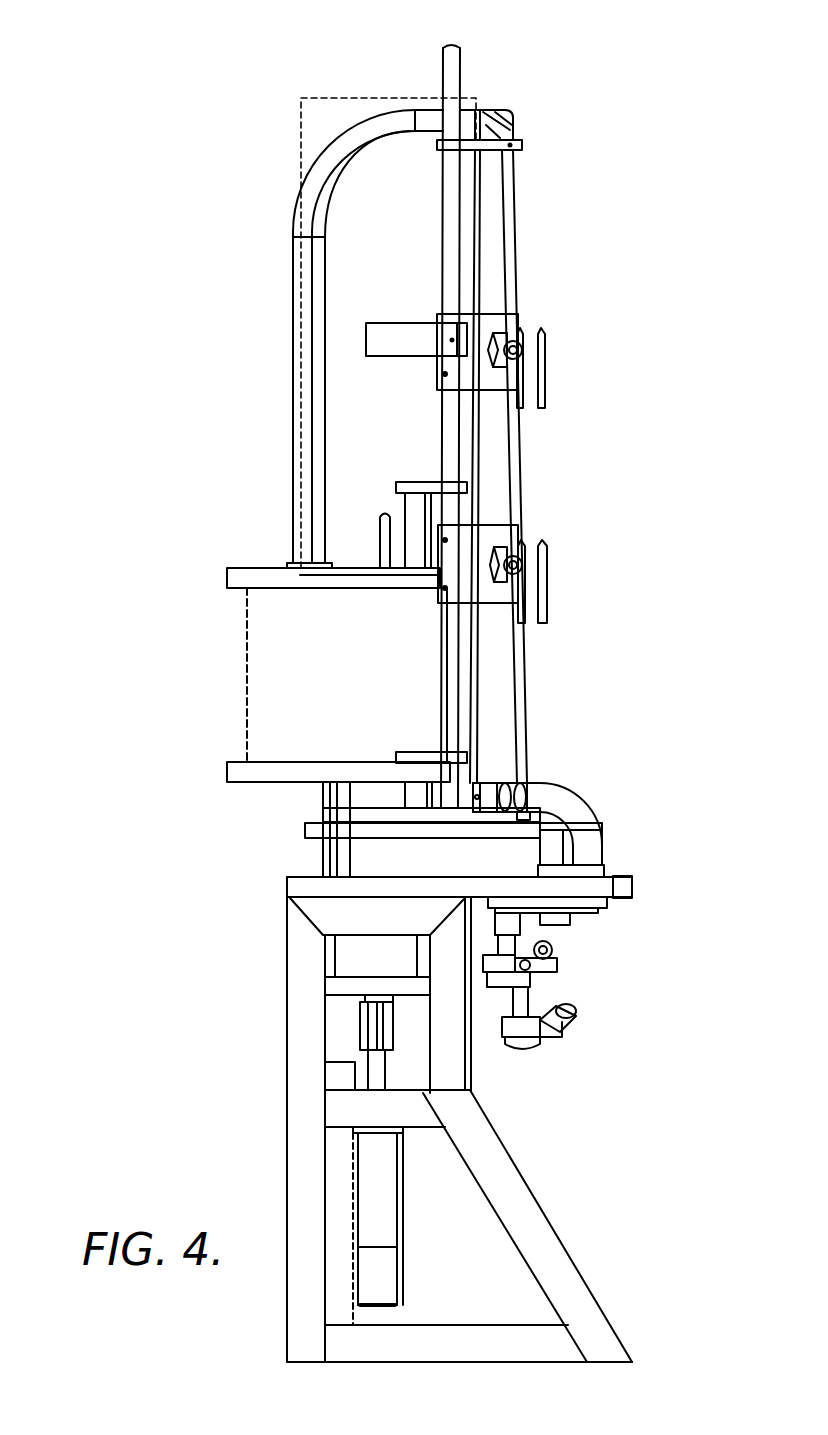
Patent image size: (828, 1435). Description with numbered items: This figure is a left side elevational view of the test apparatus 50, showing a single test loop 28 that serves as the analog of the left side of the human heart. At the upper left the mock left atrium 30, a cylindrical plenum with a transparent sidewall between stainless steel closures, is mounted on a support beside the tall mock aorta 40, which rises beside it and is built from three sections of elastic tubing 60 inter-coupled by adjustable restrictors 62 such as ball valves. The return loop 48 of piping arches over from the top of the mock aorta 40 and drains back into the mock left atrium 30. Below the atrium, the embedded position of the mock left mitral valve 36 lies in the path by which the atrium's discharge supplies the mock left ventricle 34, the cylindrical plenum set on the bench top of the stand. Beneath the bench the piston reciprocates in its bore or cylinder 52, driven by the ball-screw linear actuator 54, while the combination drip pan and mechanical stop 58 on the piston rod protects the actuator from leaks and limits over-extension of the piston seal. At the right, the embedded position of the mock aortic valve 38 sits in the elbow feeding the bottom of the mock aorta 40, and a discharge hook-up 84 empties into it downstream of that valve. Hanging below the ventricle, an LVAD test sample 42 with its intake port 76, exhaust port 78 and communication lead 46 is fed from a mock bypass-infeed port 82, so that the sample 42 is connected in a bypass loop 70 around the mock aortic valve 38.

The test apparatus 50 is at (117, 276).
The test loop 28 is at (513, 200).
The mock aorta 40 is at (541, 426).
The elastic tubing section 60 is at (513, 242).
The adjustable restrictor 62 is at (547, 350).
The return loop 48 is at (293, 430).
The mock left atrium 30 is at (362, 699).
The mock left mitral valve position 36 is at (332, 817).
The mock left ventricle 34 is at (455, 874).
The discharge hook-up 84 is at (540, 783).
The mock aortic valve position 38 is at (515, 818).
The bypass loop 70 is at (610, 847).
The mock bypass-infeed port 82 is at (520, 928).
The intake port 76 is at (532, 1003).
The exhaust port 78 is at (572, 1010).
The communication lead 46 is at (565, 1037).
The LVAD test sample 42 is at (525, 1052).
The cylinder 52 is at (400, 980).
The combination drip pan and mechanical stop 58 is at (337, 985).
The ball-screw linear actuator 54 is at (396, 1201).